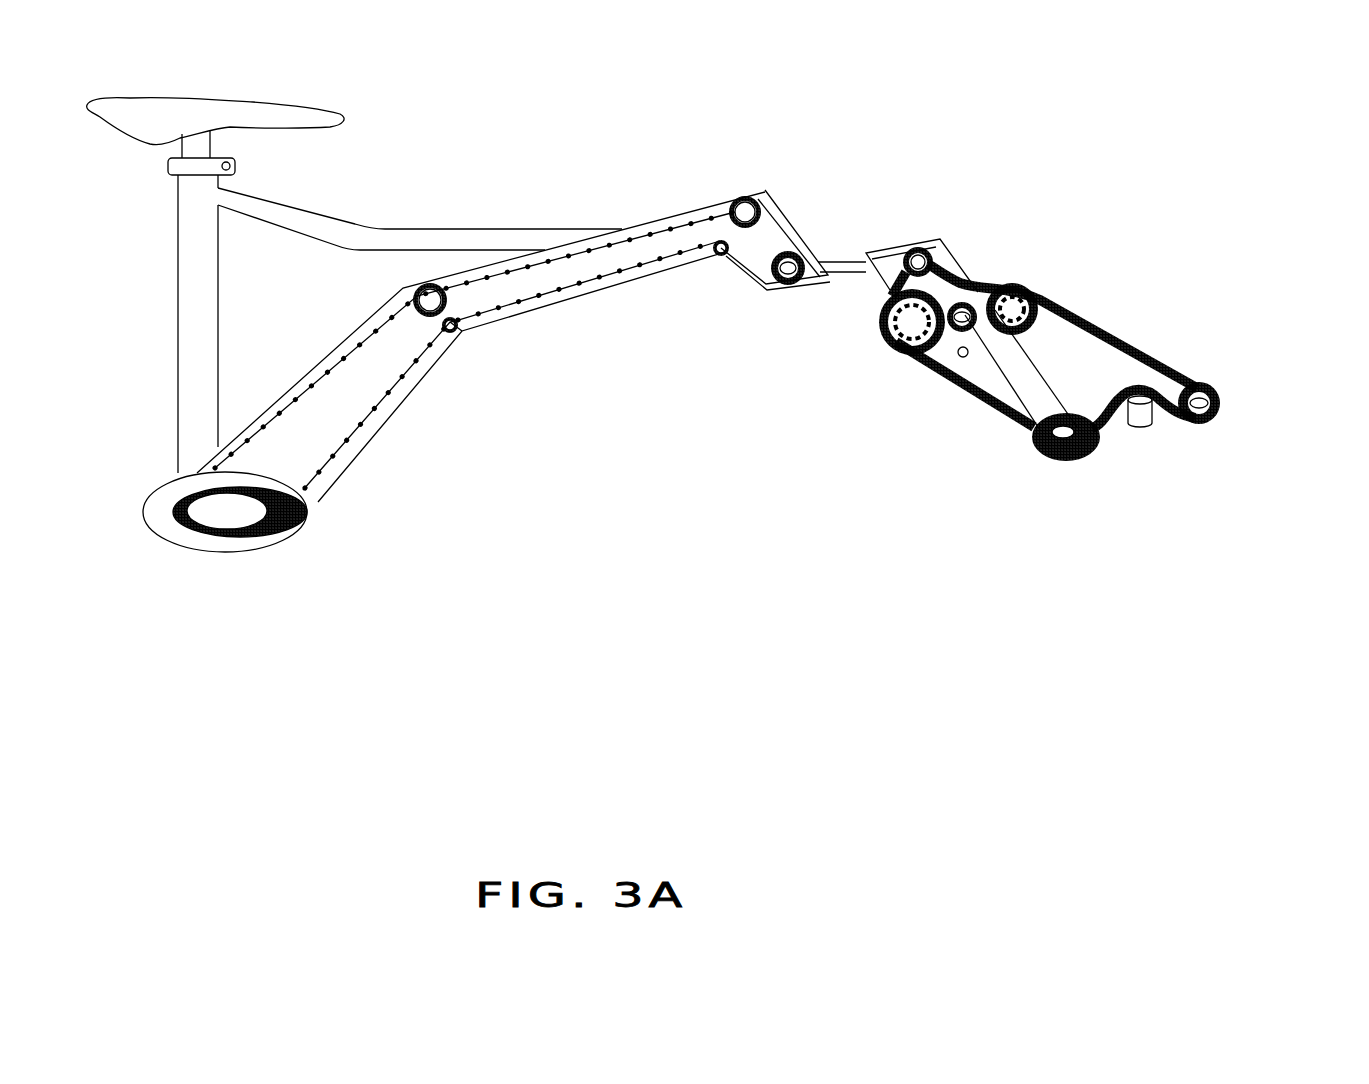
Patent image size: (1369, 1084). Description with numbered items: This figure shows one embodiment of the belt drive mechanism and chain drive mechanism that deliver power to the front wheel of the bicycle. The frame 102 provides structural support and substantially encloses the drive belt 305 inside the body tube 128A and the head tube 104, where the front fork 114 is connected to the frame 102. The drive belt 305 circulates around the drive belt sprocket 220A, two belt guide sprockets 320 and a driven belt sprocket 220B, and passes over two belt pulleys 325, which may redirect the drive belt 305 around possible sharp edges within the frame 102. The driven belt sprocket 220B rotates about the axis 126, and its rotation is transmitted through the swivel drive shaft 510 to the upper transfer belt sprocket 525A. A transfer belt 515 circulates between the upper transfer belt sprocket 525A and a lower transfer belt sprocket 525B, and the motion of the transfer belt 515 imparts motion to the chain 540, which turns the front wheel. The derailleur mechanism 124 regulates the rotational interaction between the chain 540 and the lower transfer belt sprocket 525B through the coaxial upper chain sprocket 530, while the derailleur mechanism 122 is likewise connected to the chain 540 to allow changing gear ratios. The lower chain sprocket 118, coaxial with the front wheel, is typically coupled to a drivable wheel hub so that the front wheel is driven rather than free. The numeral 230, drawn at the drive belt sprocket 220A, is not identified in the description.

The frame 102 is at (303, 208).
The drive belt 305 is at (385, 398).
The belt guide sprockets 320 is at (431, 300).
The belt pulleys 325 is at (722, 252).
The body tube 128A is at (662, 218).
The head tube 104 is at (783, 280).
The driven belt sprocket 220B is at (798, 286).
The swivel drive shaft 510 is at (862, 274).
The axis 126 is at (942, 243).
The upper transfer belt sprocket 525A is at (925, 250).
The derailleur mechanism 124 is at (1012, 292).
The transfer belt 515 is at (990, 282).
The upper chain sprocket 530 is at (1062, 310).
The chain 540 is at (1140, 352).
The derailleur mechanism 122 is at (1215, 407).
The lower chain sprocket 118 is at (1105, 452).
The front fork 114 is at (1020, 387).
The lower transfer belt sprocket 525B is at (963, 353).
The outer ring 230 is at (248, 551).
The drive belt sprocket 220A is at (255, 493).